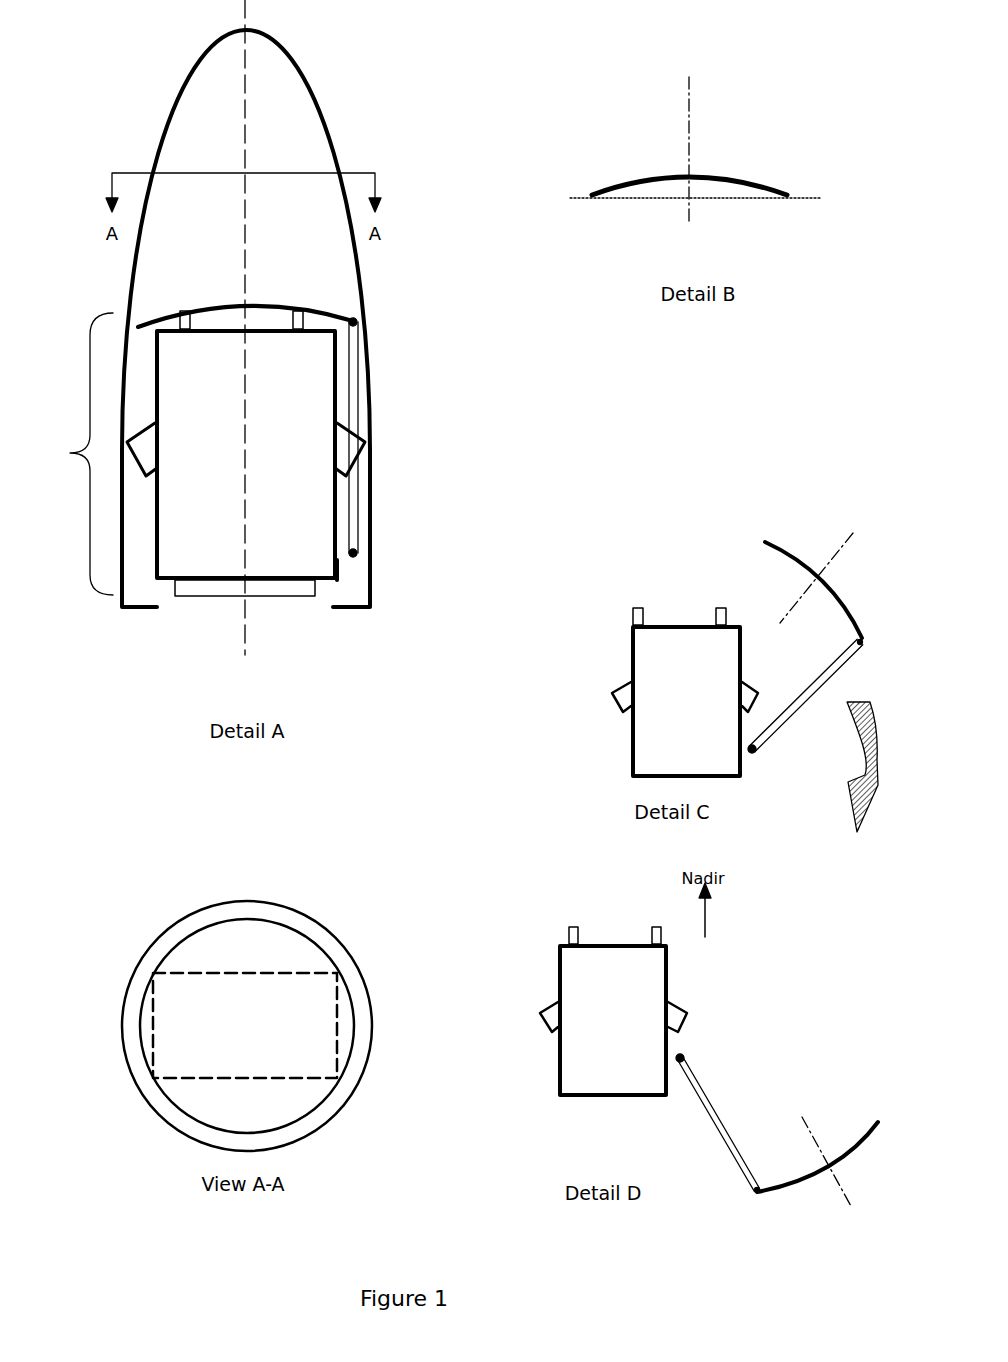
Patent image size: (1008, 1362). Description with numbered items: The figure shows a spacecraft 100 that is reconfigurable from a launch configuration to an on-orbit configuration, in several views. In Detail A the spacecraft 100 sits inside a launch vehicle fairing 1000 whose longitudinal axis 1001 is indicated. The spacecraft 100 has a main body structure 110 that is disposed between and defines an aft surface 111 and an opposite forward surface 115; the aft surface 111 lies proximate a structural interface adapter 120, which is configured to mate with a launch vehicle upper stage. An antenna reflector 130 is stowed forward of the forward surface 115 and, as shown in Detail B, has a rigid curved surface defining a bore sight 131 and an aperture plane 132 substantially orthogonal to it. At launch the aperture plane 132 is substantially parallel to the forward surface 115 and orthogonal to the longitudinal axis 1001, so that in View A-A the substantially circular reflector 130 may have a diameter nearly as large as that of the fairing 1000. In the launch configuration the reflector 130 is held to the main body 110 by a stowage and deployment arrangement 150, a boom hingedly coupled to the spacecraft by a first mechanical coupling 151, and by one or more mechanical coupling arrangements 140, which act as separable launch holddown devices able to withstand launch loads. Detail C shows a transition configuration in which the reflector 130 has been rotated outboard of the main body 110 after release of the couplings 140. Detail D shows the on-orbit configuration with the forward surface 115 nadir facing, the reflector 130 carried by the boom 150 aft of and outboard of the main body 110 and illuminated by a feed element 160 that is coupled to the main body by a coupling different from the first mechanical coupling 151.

The launch vehicle fairing 1000 is at (323, 110).
The longitudinal axis 1001 is at (248, 642).
The spacecraft 100 is at (560, 898).
The main body structure 110 is at (183, 441).
The aft surface 111 is at (325, 585).
The forward surface 115 is at (317, 323).
The structural interface adapter 120 is at (213, 597).
The antenna reflector 130 is at (155, 313).
The bore sight 131 is at (690, 112).
The aperture plane 132 is at (760, 198).
The mechanical coupling arrangement 140 is at (193, 313).
The stowage and deployment arrangement 150 is at (358, 494).
The first mechanical coupling 151 is at (348, 556).
The feed element 160 is at (757, 687).